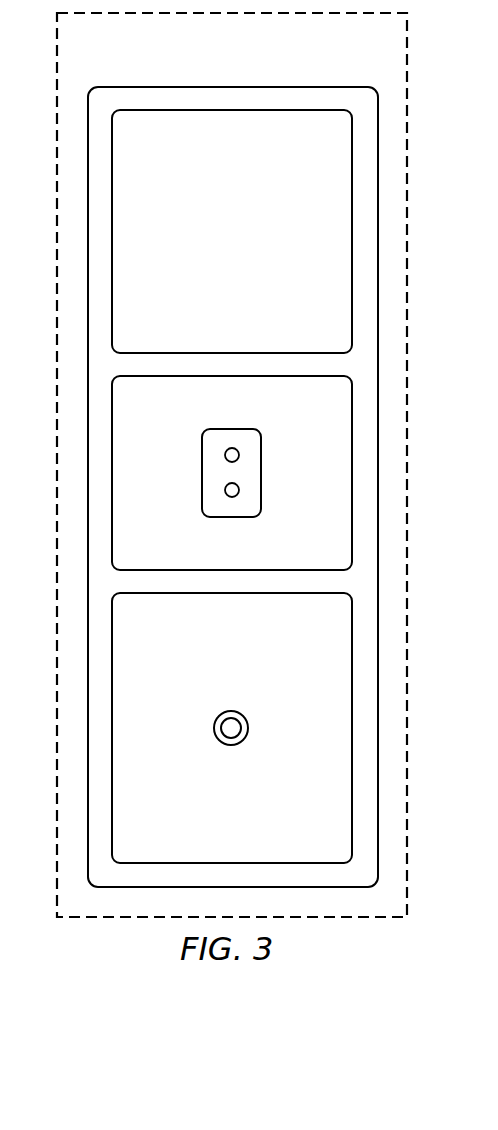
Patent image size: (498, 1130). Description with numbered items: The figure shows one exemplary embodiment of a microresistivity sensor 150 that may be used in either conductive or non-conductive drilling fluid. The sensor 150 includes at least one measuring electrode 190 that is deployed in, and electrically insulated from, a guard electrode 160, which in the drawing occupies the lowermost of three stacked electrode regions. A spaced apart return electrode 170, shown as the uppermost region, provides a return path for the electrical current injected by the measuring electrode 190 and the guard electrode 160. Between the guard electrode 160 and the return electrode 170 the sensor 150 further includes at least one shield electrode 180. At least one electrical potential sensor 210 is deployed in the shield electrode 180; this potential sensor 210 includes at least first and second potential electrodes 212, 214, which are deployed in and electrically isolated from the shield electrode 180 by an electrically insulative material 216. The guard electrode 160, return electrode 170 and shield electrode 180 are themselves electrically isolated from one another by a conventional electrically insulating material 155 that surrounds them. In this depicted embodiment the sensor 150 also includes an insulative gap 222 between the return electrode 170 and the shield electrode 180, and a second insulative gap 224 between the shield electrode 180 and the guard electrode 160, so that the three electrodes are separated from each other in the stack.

The microresistivity sensor 150 is at (278, 88).
The electrically insulating material 155 is at (110, 97).
The guard electrode 160 is at (251, 668).
The return electrode 170 is at (252, 245).
The shield electrode 180 is at (168, 419).
The measuring electrode 190 is at (243, 721).
The electrical potential sensor 210 is at (262, 474).
The first potential electrode 212 is at (232, 448).
The second potential electrode 214 is at (232, 497).
The electrically insulative material 216 is at (208, 472).
The insulative gap 222 is at (183, 363).
The insulative gap 224 is at (163, 583).